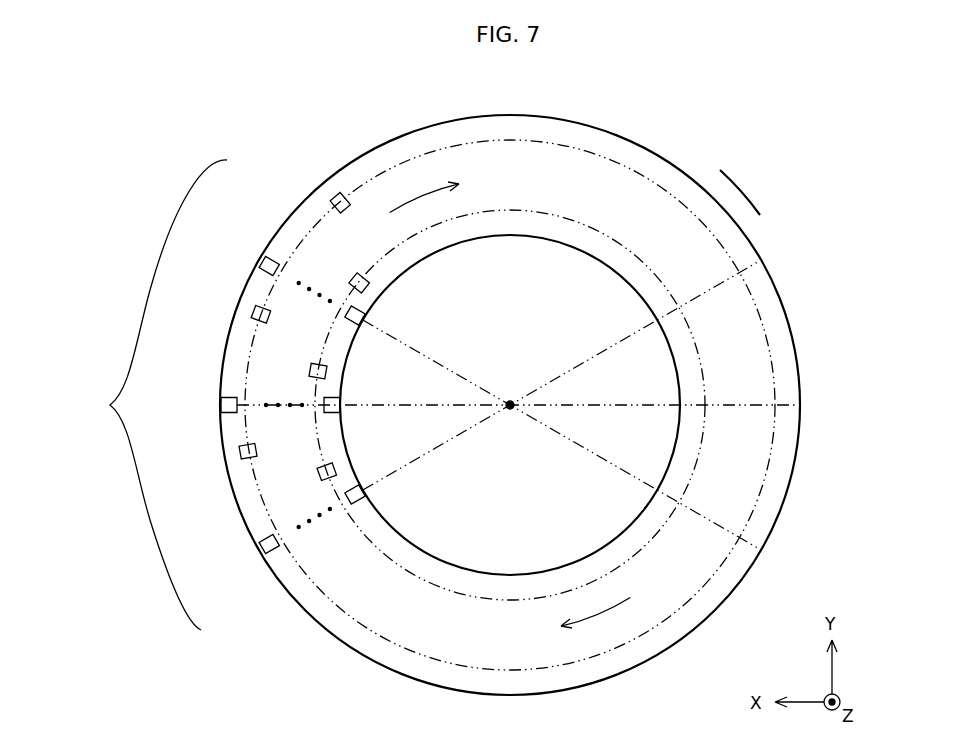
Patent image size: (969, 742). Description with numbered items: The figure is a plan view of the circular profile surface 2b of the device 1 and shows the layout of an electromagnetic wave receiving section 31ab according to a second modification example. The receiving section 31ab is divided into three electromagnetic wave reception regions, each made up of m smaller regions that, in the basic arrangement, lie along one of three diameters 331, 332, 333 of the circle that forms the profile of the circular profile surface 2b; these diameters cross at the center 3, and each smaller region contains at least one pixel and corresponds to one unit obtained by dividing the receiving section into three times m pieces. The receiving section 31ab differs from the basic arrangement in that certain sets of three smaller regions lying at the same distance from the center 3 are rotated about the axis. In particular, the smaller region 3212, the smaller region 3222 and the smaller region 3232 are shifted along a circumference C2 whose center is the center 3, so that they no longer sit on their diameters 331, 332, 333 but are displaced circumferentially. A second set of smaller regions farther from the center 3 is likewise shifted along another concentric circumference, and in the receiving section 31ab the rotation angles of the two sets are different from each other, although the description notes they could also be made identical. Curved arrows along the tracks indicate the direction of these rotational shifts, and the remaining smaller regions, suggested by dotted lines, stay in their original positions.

The encoder / rotating device 1 is at (773, 125).
The circular profile surface 2b is at (688, 186).
The circumference C2 is at (620, 244).
The center 3 is at (512, 401).
The diameter 331 is at (713, 405).
The diameter 332 is at (703, 513).
The diameter 333 is at (696, 300).
The electromagnetic wave receiving section 31ab is at (215, 395).
The smaller region 3212 is at (313, 371).
The smaller region 3222 is at (352, 279).
The smaller region 3232 is at (322, 472).